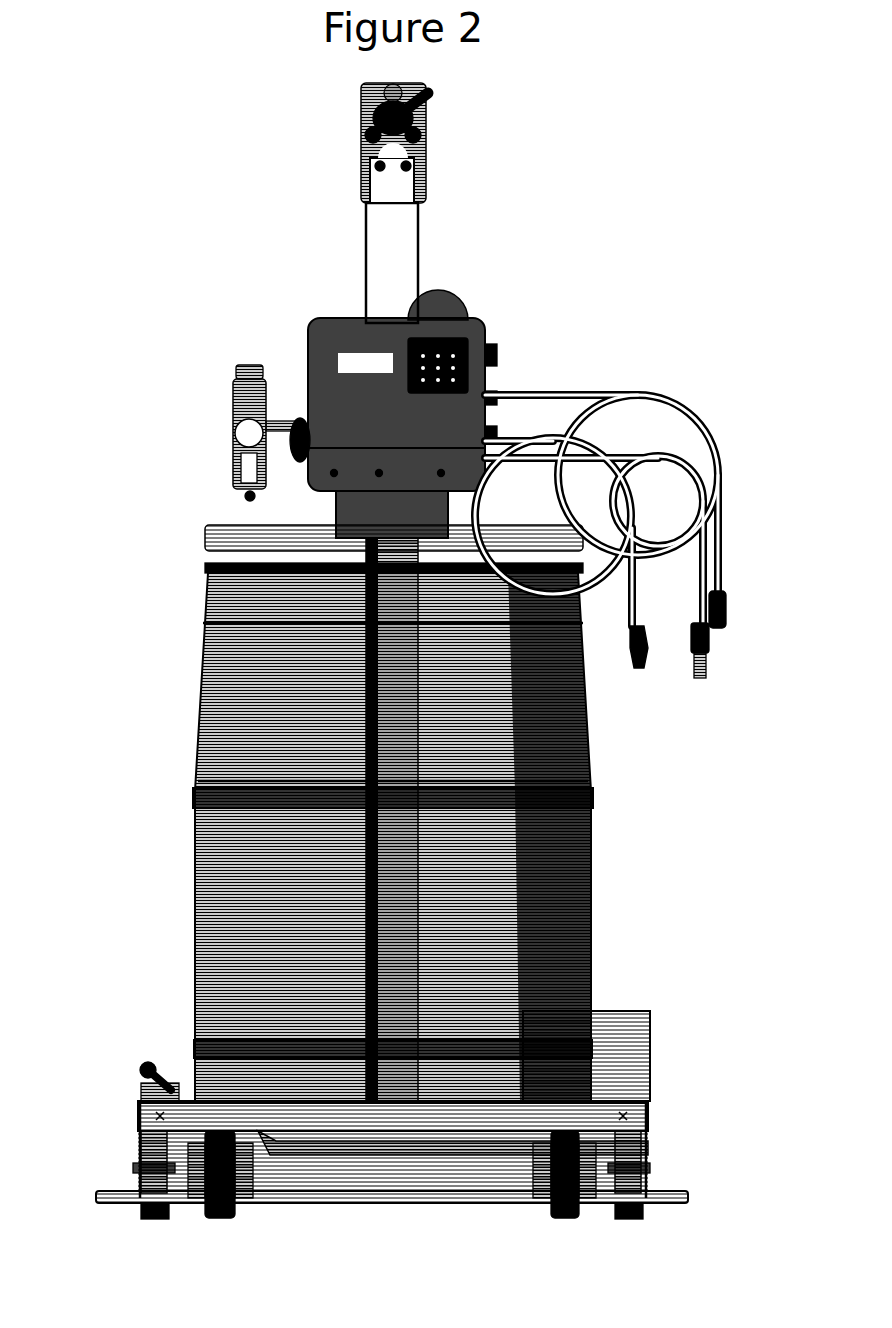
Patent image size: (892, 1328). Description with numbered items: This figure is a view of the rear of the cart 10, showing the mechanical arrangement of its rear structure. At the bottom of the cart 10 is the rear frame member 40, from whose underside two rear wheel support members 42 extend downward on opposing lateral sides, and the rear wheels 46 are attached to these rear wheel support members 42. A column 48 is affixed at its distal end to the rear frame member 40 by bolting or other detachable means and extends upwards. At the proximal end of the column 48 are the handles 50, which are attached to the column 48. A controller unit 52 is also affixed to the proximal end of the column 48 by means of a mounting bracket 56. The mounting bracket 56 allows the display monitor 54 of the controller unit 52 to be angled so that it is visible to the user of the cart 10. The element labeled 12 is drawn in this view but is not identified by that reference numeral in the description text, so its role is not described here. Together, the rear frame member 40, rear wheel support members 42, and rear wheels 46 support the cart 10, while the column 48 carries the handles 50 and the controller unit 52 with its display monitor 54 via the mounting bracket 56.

The cart 10 is at (136, 417).
The dispensing valve / nozzle assembly 12 is at (412, 124).
The rear frame member 40 is at (378, 1103).
The rear wheel support members 42 is at (238, 1137).
The rear wheels 46 is at (223, 1187).
The column 48 is at (370, 870).
The handles 50 is at (215, 536).
The controller unit 52 is at (478, 328).
The display monitor 54 is at (480, 345).
The mounting bracket 56 is at (330, 497).